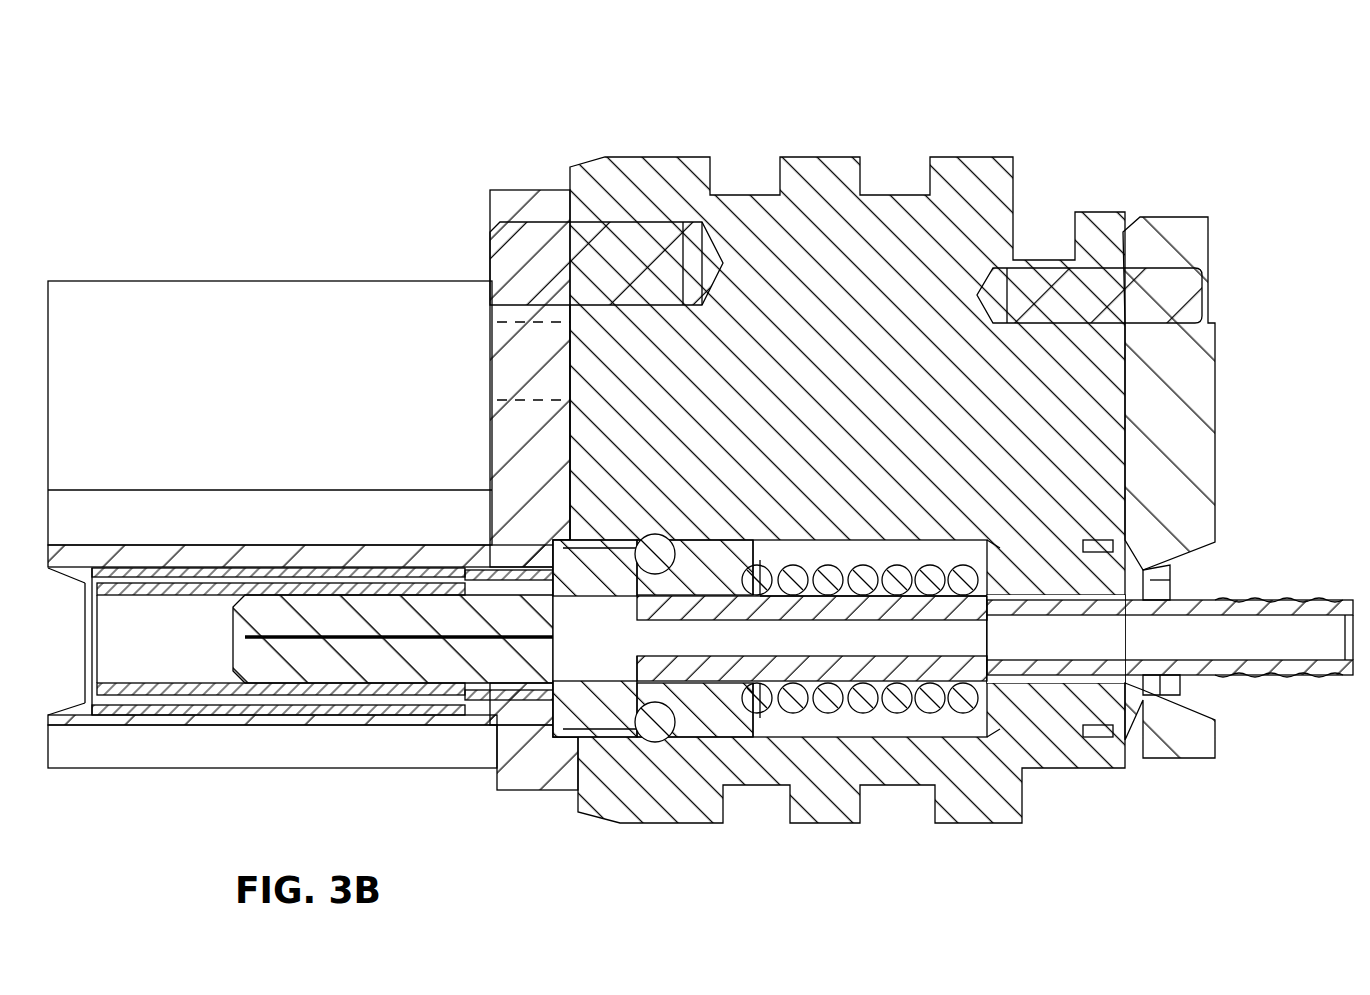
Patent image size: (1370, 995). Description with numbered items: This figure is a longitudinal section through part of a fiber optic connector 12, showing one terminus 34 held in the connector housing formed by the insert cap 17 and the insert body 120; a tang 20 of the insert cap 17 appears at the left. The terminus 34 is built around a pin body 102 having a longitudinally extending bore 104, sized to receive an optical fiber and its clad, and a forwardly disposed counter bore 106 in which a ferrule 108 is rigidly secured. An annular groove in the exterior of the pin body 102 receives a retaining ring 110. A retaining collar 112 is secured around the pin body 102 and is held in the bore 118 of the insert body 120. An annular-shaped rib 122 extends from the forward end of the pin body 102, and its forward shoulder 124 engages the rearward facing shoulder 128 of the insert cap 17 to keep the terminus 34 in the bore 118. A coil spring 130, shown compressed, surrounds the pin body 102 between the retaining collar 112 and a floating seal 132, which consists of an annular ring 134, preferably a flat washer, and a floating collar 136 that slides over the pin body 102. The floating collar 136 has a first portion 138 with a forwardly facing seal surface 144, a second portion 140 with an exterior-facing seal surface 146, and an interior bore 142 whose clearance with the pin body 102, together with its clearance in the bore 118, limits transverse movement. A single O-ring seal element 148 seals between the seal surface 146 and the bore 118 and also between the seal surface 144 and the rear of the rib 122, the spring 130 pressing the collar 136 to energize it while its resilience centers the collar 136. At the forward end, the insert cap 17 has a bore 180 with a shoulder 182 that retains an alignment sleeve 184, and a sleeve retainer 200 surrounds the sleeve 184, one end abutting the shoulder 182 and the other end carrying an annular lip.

The fiber optic connector 12 is at (182, 121).
The insert cap 17 is at (525, 200).
The tang 20 is at (82, 300).
The terminus 34 is at (1147, 814).
The pin body 102 is at (1130, 675).
The bore 104 is at (1220, 650).
The counter bore 106 is at (540, 578).
The ferrule 108 is at (232, 668).
The retaining ring 110 is at (1175, 588).
The retaining collar 112 is at (1060, 720).
The bore 118 is at (978, 790).
The insert body 120 is at (995, 210).
The annular-shaped rib 122 is at (540, 580).
The shoulder 124 is at (600, 575).
The rearward facing shoulder 128 is at (545, 770).
The coil spring 130 is at (915, 708).
The floating seal 132 is at (690, 765).
The annular ring 134 is at (745, 712).
The floating collar 136 is at (710, 705).
The first portion 138 is at (755, 592).
The second portion 140 is at (720, 560).
The interior bore 142 is at (800, 580).
The forwardly facing seal surface 144 is at (655, 660).
The exterior-facing seal surface 146 is at (652, 690).
The seal element 148 is at (655, 730).
The bore 180 is at (478, 712).
The shoulder 182 is at (85, 718).
The alignment sleeve 184 is at (122, 596).
The sleeve retainer 200 is at (258, 720).